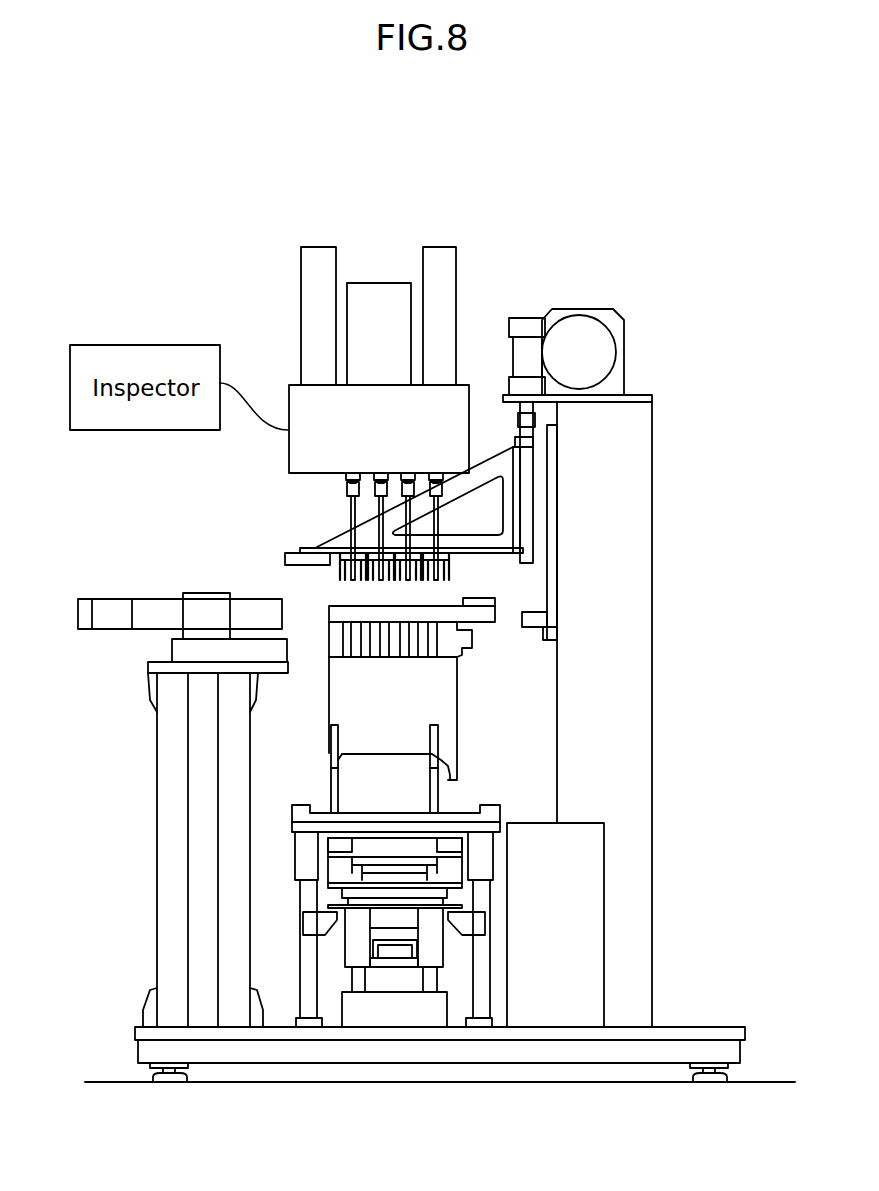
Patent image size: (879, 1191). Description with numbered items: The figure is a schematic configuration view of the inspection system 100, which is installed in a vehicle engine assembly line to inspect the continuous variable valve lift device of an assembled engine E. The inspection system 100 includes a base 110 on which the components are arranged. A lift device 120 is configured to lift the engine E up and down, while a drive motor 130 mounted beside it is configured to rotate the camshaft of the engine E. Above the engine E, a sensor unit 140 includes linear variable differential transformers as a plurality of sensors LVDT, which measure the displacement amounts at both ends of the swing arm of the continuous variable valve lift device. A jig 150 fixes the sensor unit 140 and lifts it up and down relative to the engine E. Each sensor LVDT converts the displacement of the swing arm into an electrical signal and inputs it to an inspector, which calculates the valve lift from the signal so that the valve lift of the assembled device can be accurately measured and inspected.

The inspection system 100 is at (656, 324).
The base 110 is at (145, 1053).
The lift device 120 is at (383, 1000).
The drive motor 130 is at (105, 623).
The sensor unit 140 is at (467, 262).
The jig 150 is at (513, 507).
The engine E is at (453, 698).
The linear variable differential transformer sensor LVDT is at (347, 578).